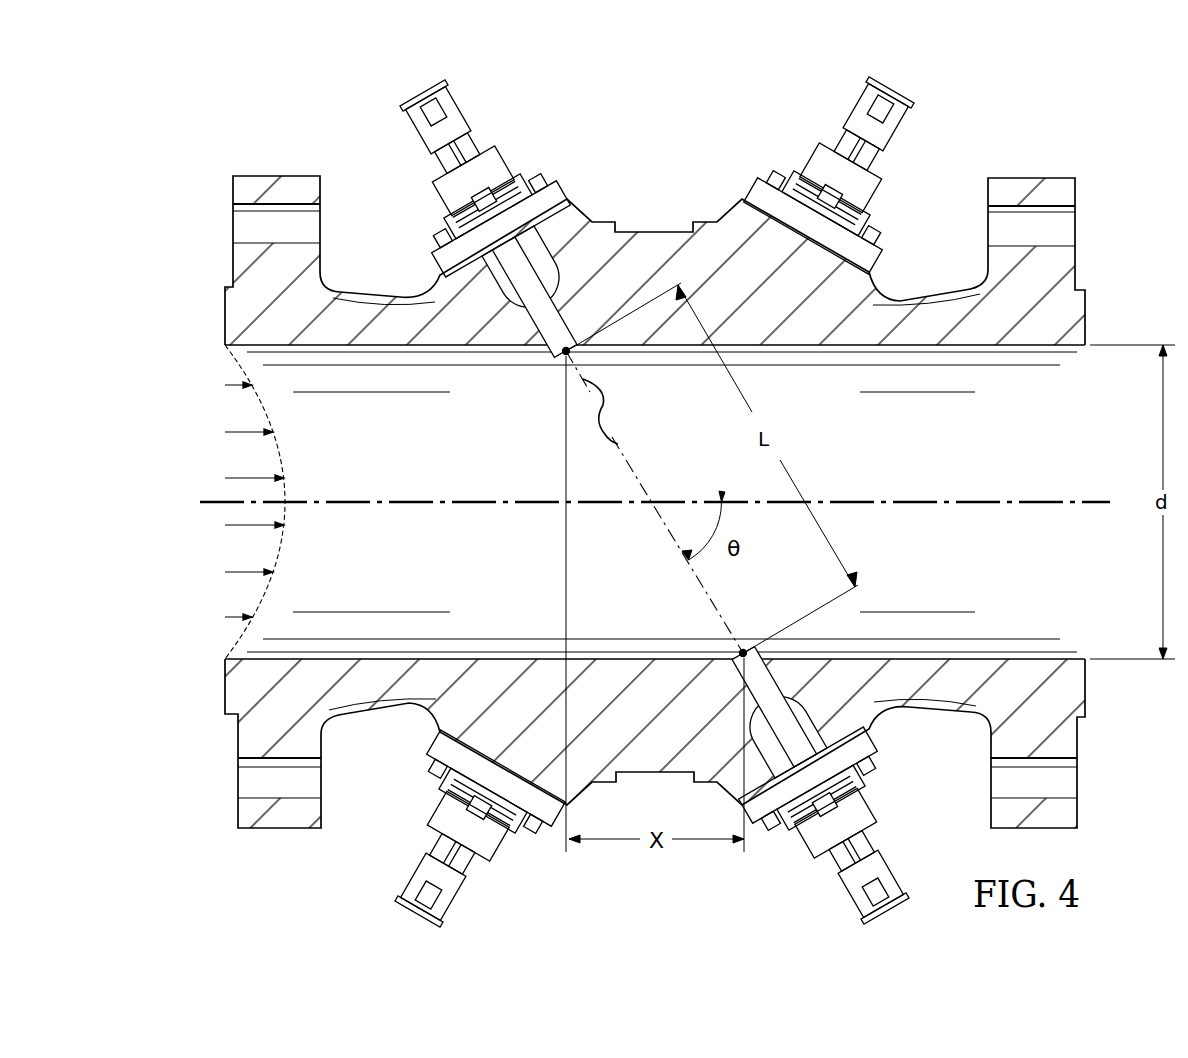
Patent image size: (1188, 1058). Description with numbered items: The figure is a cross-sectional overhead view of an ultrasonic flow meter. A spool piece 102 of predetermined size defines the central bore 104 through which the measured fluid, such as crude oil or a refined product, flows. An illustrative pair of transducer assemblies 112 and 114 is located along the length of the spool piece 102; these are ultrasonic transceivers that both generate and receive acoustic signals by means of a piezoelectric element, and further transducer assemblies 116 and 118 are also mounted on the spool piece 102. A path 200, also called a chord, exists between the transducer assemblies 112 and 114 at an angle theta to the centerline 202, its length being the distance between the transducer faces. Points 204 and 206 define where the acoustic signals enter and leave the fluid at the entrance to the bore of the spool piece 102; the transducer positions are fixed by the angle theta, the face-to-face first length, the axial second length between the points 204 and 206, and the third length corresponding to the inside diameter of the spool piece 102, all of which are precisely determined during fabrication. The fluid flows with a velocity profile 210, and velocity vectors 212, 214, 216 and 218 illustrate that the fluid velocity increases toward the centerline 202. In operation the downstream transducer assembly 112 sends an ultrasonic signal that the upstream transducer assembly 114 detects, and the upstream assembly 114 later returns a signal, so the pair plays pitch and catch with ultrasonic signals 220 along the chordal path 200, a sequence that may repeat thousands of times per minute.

The spool piece 102 is at (657, 230).
The central bore 104 is at (922, 451).
The transducer assembly 112 is at (858, 896).
The transducer assembly 114 is at (502, 163).
The transducer 116 is at (460, 897).
The transducer 118 is at (852, 112).
The path 200 is at (717, 609).
The centerline 202 is at (960, 505).
The point 204 is at (745, 650).
The point 206 is at (560, 356).
The velocity profile 210 is at (283, 452).
The velocity vector 212 is at (225, 432).
The velocity vector 214 is at (225, 478).
The velocity vector 216 is at (225, 525).
The velocity vector 218 is at (225, 572).
The ultrasonic signals 220 is at (611, 392).